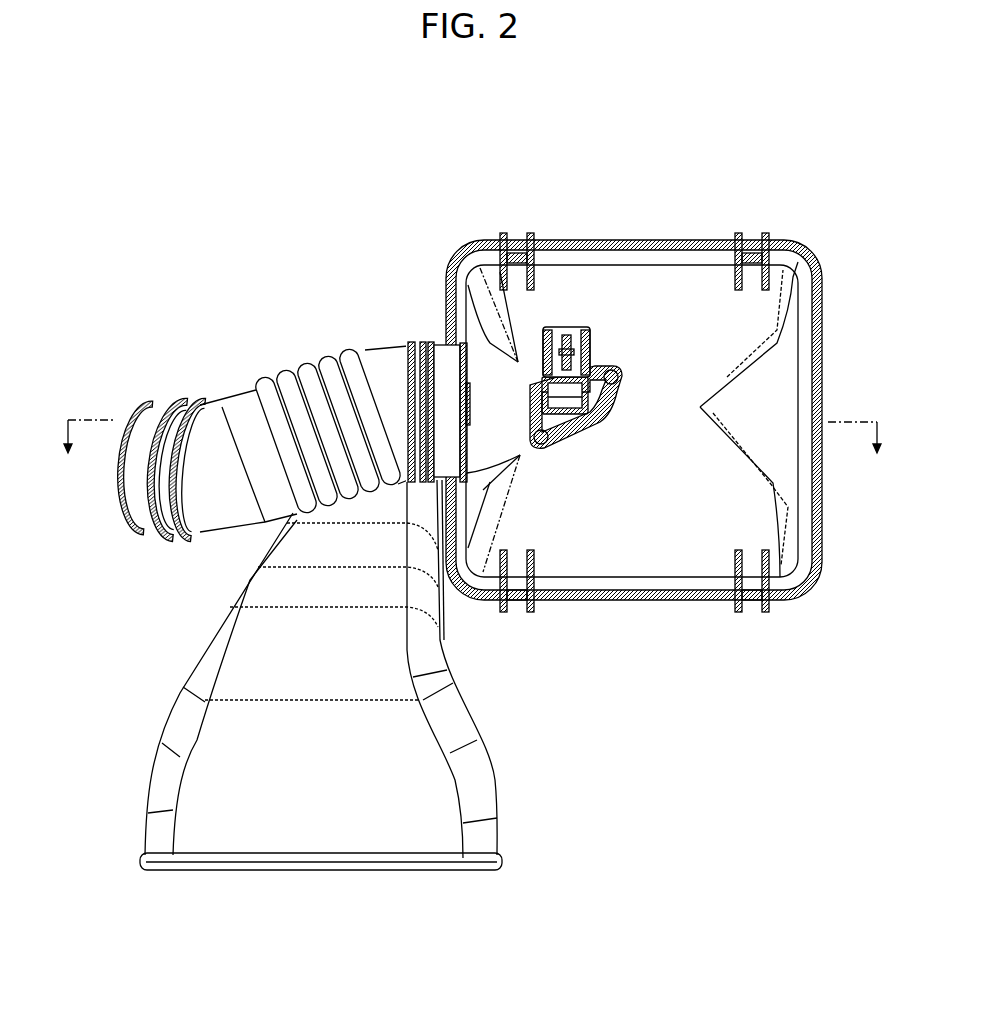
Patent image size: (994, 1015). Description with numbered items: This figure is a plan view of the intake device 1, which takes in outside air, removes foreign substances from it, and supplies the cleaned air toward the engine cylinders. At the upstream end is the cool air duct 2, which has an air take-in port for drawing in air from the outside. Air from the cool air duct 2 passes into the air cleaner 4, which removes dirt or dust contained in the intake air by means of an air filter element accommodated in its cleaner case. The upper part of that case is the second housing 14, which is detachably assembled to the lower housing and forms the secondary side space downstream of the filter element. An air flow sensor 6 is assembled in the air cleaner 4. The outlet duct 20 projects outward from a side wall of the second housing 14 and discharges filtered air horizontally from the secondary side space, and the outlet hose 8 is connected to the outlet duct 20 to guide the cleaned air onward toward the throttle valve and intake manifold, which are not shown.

The intake device 1 is at (232, 240).
The cool air duct 2 is at (184, 655).
The air cleaner 4 is at (641, 234).
The air flow sensor 6 is at (587, 330).
The outlet hose 8 is at (297, 352).
The second housing 14 is at (760, 308).
The outlet duct 20 is at (490, 402).